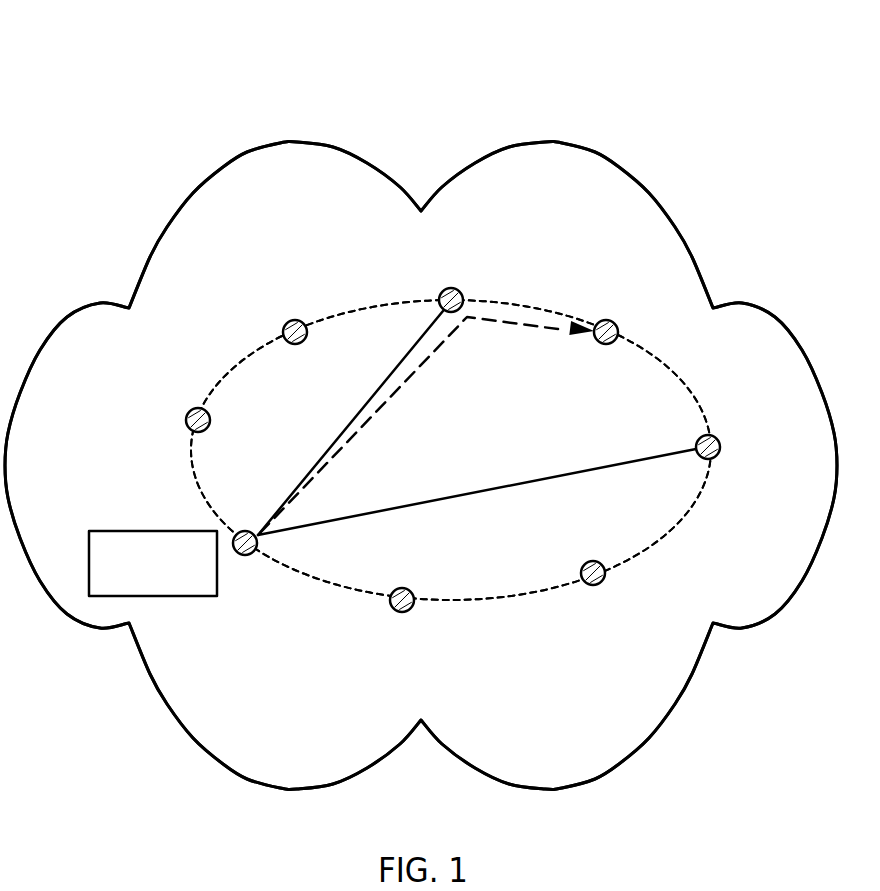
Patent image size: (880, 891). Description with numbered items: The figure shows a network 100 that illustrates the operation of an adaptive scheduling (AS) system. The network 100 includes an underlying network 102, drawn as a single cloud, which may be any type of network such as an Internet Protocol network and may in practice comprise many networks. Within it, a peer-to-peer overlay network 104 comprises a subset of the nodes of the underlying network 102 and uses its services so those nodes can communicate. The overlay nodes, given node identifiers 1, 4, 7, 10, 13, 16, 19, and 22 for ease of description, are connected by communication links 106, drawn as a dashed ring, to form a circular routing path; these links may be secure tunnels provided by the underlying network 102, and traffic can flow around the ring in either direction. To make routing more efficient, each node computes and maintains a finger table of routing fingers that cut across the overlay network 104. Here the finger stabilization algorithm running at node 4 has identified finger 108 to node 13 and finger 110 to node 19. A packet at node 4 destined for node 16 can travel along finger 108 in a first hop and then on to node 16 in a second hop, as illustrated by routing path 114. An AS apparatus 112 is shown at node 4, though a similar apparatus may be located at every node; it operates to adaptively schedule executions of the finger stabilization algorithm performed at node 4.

The network 100 is at (701, 78).
The underlying network 102 is at (247, 152).
The peer-to-peer overlay network 104 is at (508, 617).
The communication links 106 is at (398, 300).
The finger 108 is at (365, 406).
The finger 110 is at (559, 476).
The AS apparatus 112 is at (148, 530).
The routing path 114 is at (421, 368).
The node 1 is at (402, 618).
The node 4 is at (245, 559).
The node 7 is at (186, 423).
The node 10 is at (291, 316).
The node 13 is at (460, 287).
The node 16 is at (621, 323).
The node 19 is at (727, 447).
The node 22 is at (603, 590).